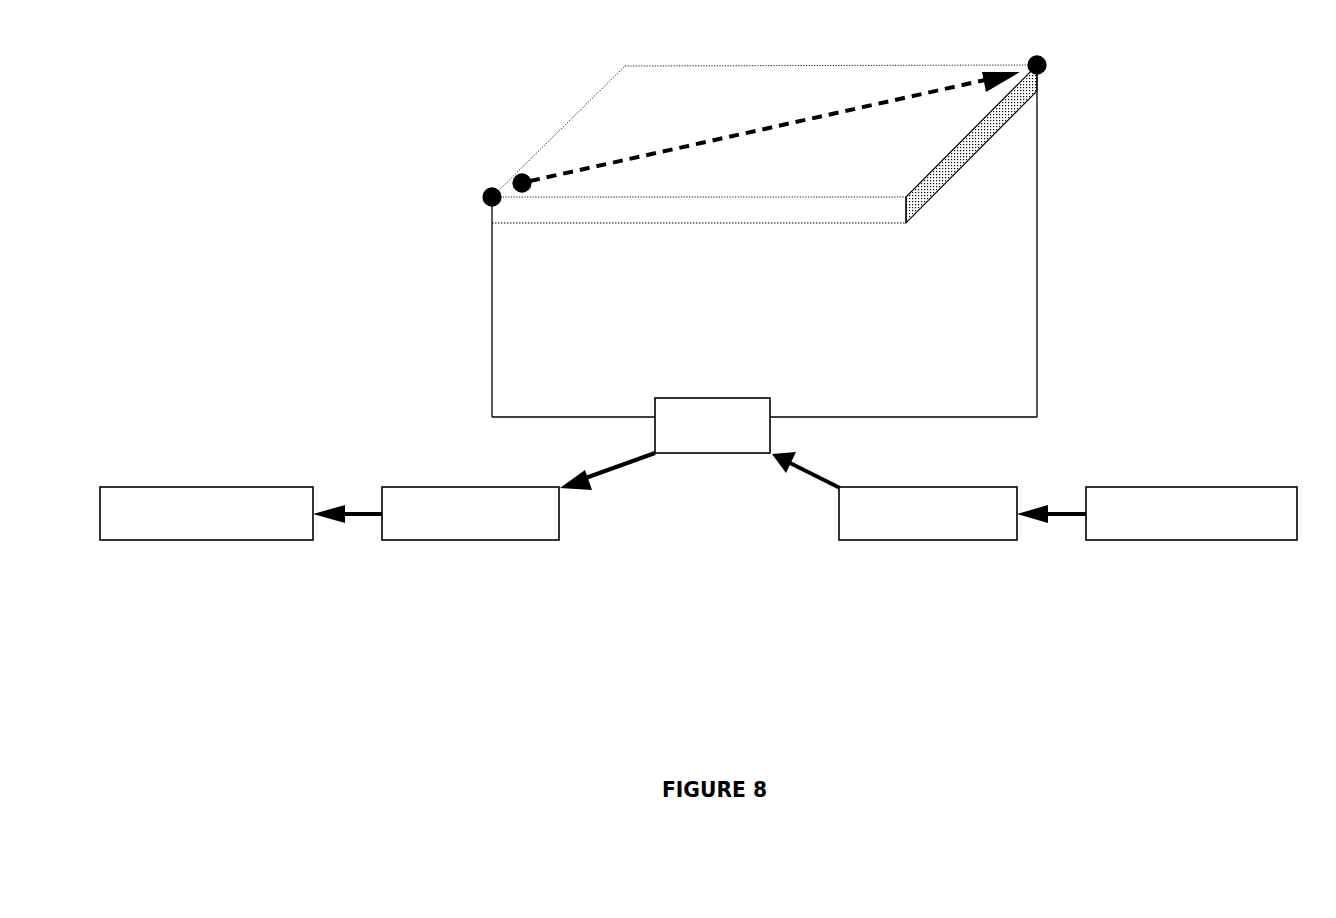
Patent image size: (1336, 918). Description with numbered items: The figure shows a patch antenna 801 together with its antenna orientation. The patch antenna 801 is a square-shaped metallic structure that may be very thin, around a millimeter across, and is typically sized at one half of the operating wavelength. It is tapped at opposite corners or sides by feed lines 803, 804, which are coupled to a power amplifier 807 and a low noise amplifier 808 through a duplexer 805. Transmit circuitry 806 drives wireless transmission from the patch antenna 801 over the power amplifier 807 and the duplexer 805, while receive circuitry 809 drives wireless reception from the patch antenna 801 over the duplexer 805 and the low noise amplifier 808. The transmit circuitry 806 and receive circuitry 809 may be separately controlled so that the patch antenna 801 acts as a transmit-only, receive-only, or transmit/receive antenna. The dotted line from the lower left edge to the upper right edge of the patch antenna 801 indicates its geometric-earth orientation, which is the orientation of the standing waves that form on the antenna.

The patch antenna 801 is at (625, 67).
The feed line 803 is at (492, 290).
The feed line 804 is at (1037, 356).
The duplexer 805 is at (712, 425).
The transmit circuitry 806 is at (1191, 513).
The power amplifier 807 is at (928, 513).
The low noise amplifier 808 is at (470, 513).
The receive circuitry 809 is at (206, 513).